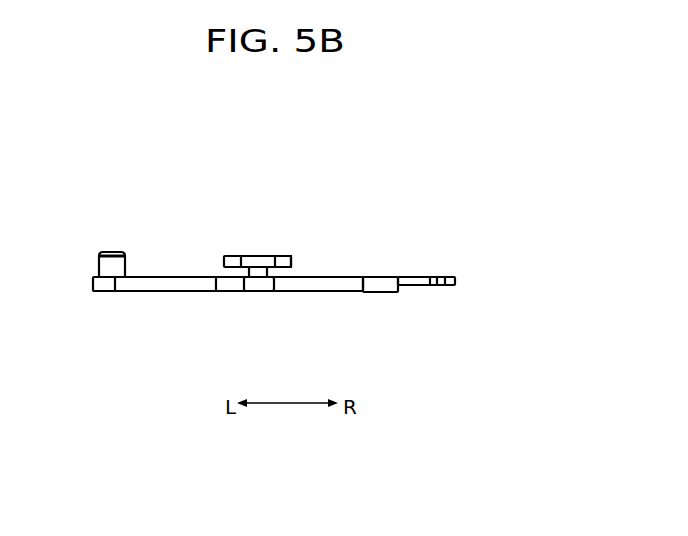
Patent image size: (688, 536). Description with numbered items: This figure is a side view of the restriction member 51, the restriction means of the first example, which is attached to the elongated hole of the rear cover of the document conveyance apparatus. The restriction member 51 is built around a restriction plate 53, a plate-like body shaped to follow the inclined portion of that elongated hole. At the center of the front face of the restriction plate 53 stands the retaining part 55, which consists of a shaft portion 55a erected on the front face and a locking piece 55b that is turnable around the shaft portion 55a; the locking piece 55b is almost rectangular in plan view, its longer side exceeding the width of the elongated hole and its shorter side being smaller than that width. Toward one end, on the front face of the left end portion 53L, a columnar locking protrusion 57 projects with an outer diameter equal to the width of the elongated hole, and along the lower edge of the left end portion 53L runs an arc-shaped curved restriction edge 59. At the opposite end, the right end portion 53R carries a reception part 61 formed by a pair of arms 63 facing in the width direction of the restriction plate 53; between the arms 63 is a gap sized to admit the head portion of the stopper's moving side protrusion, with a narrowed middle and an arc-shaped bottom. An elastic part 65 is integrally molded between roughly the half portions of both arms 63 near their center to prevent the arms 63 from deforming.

The restriction member 51 is at (249, 162).
The restriction plate 53 is at (195, 275).
The left end portion 53L is at (170, 277).
The right end portion 53R is at (337, 276).
The retaining part 55 is at (252, 254).
The shaft portion 55a is at (262, 279).
The locking piece 55b is at (283, 262).
The locking protrusion 57 is at (105, 262).
The restriction edge 59 is at (162, 282).
The reception part 61 is at (418, 275).
The arms 63 is at (430, 280).
The elastic part 65 is at (387, 289).